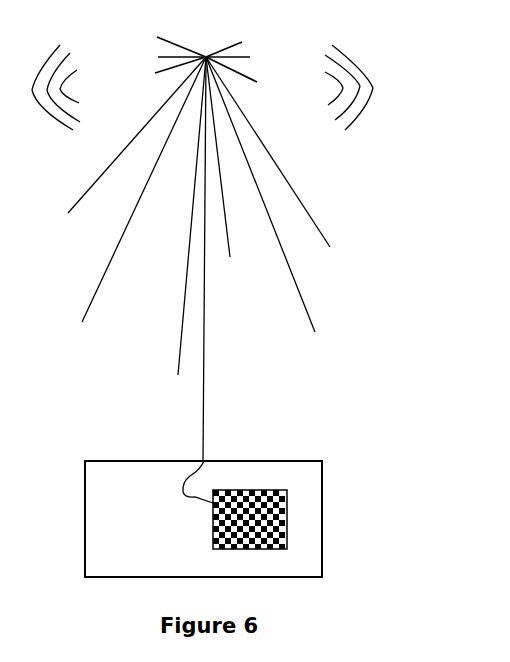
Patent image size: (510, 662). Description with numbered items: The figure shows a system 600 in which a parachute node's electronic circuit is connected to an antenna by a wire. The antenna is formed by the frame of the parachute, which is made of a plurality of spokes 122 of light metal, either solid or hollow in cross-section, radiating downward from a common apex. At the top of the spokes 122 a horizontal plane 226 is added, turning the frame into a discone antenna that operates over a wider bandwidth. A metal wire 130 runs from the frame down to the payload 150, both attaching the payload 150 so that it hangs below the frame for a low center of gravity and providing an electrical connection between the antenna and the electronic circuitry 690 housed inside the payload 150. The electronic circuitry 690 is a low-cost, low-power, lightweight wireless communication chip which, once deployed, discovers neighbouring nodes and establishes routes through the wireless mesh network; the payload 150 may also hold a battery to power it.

The system 600 is at (256, 104).
The horizontal plane on the top 226 is at (190, 51).
The spokes 122 is at (195, 216).
The wire 130 is at (214, 280).
The payload 150 is at (203, 519).
The electronic circuitry 690 is at (296, 513).